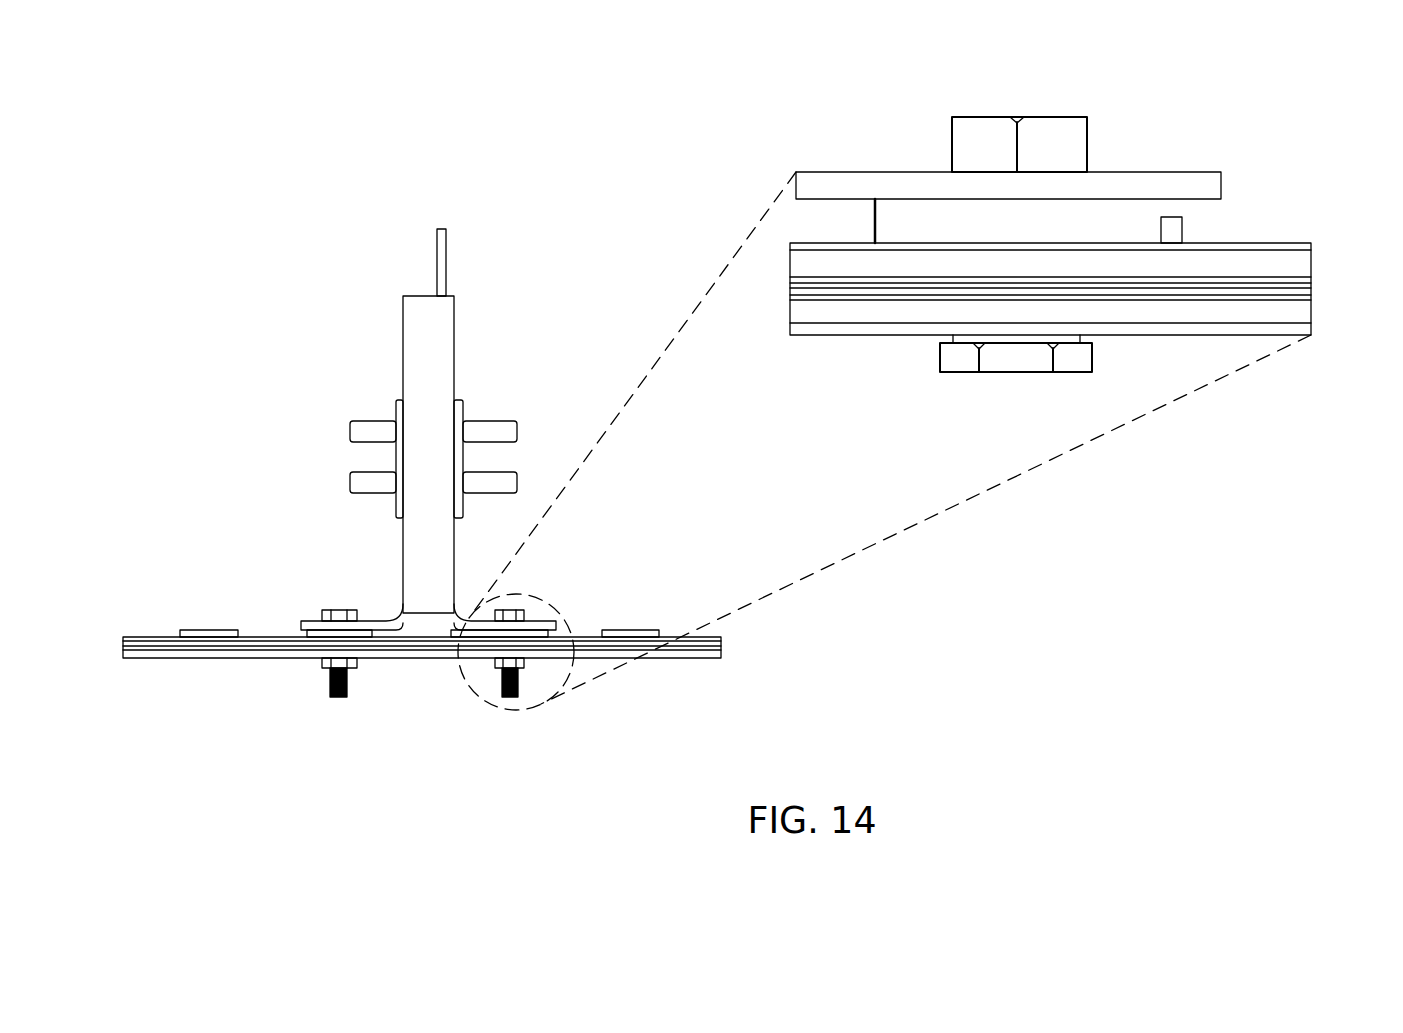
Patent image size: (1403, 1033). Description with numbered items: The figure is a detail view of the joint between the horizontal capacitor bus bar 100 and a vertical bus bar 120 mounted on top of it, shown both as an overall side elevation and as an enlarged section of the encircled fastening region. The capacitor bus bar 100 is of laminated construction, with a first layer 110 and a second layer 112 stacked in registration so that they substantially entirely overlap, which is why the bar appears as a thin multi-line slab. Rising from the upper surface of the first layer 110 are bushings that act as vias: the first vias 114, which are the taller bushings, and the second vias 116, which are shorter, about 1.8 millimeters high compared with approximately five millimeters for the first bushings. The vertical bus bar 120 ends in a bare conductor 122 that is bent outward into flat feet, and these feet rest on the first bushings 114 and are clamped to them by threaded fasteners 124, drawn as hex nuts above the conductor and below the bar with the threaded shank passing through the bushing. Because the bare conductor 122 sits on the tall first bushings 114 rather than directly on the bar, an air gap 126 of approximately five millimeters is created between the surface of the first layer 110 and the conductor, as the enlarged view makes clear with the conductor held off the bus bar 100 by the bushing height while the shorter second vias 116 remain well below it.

The capacitor bus bar 100 is at (240, 657).
The first layer 110 is at (722, 640).
The second layer 112 is at (722, 658).
The first vias 114 is at (313, 628).
The second vias 116 is at (205, 628).
The vertical bus bar 120 is at (360, 398).
The bare conductor 122 is at (385, 620).
The threaded fasteners 124 is at (338, 698).
The air gap 126 is at (1240, 200).